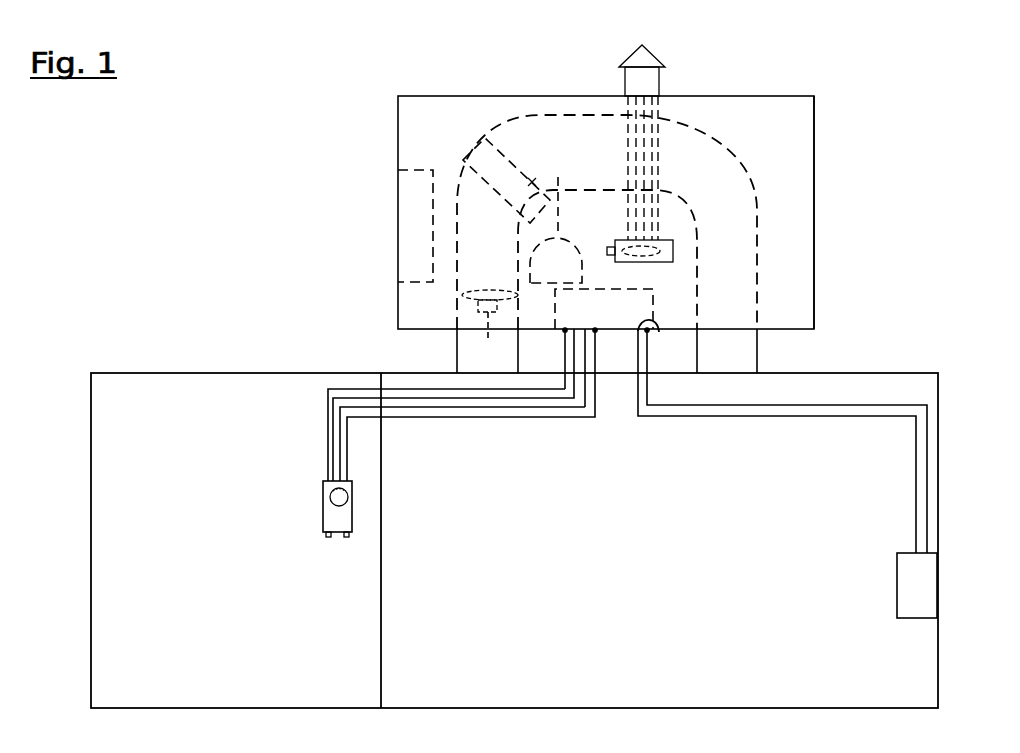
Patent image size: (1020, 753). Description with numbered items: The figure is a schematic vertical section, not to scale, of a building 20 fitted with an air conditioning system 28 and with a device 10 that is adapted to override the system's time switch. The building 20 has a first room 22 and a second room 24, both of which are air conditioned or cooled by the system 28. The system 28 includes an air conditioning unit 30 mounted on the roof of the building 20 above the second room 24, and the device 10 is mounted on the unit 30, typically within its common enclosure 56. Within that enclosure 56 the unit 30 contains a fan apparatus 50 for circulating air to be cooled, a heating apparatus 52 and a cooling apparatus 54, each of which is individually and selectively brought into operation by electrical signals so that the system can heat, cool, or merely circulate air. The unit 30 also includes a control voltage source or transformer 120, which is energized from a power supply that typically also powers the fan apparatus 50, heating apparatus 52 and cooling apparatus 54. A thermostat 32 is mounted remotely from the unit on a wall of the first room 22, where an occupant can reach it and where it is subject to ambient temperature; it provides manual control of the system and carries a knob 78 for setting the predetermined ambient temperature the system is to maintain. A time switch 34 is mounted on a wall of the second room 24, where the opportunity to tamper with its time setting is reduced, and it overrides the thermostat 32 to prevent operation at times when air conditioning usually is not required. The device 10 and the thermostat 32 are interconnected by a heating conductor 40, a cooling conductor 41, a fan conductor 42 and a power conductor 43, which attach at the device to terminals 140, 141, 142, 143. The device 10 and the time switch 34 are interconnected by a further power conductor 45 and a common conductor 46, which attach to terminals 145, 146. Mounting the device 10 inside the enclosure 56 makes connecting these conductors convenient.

The device 10 is at (664, 313).
The building 20 is at (944, 388).
The first room 22 is at (243, 613).
The second room 24 is at (675, 611).
The air conditioning system 28 is at (606, 435).
The air conditioning unit 30 is at (794, 83).
The thermostat 32 is at (316, 526).
The time switch 34 is at (928, 590).
The heating conductor 40 is at (327, 405).
The cooling conductor 41 is at (333, 424).
The fan conductor 42 is at (340, 442).
The power conductor 43 is at (347, 461).
The power conductor 45 is at (916, 476).
The common conductor 46 is at (927, 481).
The fan apparatus 50 is at (490, 329).
The heating apparatus 52 is at (657, 168).
The cooling apparatus 54 is at (537, 179).
The enclosure 56 is at (815, 141).
The knob 78 is at (327, 498).
The transformer 120 is at (418, 164).
The terminal 140 is at (565, 331).
The terminal 141 is at (574, 329).
The terminal 142 is at (585, 329).
The terminal 143 is at (595, 331).
The terminal 145 is at (665, 338).
The terminal 146 is at (647, 332).